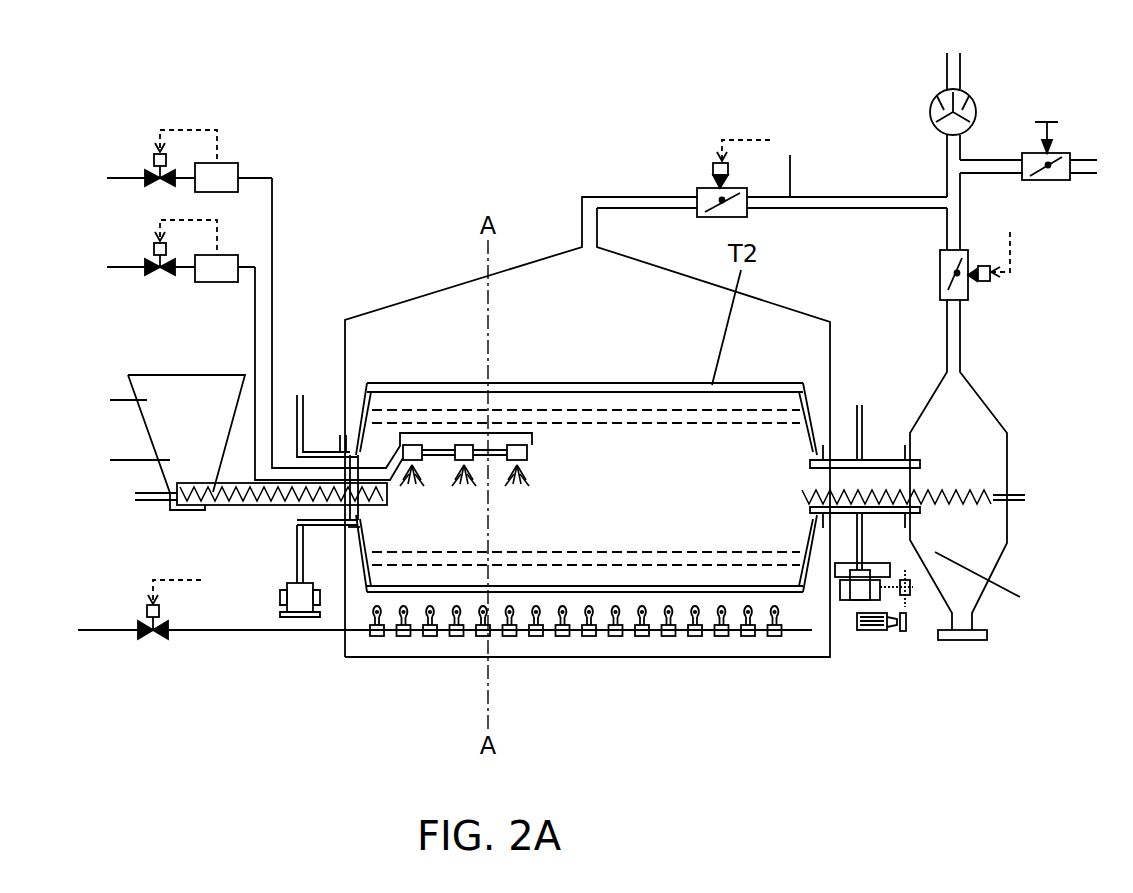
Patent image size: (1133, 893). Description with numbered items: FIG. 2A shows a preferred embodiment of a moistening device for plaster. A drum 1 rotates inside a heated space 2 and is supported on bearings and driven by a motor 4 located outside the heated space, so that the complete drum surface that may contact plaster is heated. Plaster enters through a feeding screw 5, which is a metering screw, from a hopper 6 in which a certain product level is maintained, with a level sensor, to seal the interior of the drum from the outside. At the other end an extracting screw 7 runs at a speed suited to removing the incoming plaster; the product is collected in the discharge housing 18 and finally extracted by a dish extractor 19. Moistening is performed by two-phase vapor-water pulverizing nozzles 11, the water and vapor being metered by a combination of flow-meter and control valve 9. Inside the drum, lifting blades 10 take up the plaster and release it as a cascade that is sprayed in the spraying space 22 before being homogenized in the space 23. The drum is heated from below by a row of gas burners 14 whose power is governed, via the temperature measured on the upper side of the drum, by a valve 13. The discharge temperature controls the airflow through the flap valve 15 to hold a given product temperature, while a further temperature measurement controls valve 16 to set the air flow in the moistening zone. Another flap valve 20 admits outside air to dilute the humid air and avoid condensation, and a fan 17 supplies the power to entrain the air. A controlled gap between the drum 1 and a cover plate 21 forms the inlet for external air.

The drum 1 is at (437, 383).
The heated space 2 is at (537, 293).
The motor 4 is at (885, 632).
The feeding screw 5 is at (236, 510).
The hopper 6 is at (180, 450).
The extracting screw 7 is at (980, 500).
The flow-meter and control valve 9 is at (217, 135).
The lifting blades 10 is at (603, 566).
The pulverizing nozzles 11 is at (398, 443).
The valve 13 is at (155, 640).
The gas burners 14 is at (405, 637).
The flap valve 15 is at (940, 270).
The valve 16 is at (700, 186).
The fan 17 is at (932, 97).
The discharge housing 18 is at (968, 470).
The dish extractor 19 is at (980, 643).
The flap valve 20 is at (1063, 150).
The cover plate 21 is at (338, 530).
The spraying space 22 is at (452, 550).
The homogenizing space 23 is at (730, 535).